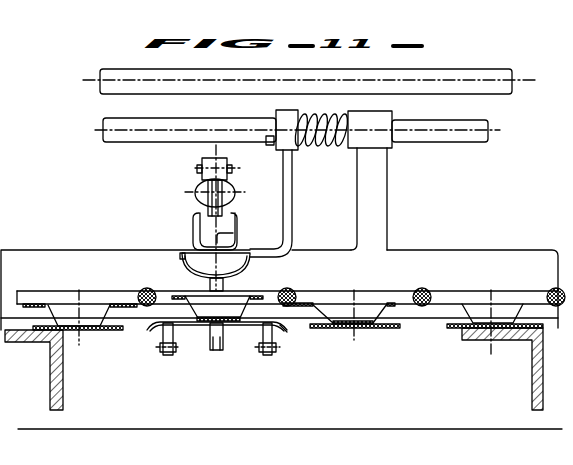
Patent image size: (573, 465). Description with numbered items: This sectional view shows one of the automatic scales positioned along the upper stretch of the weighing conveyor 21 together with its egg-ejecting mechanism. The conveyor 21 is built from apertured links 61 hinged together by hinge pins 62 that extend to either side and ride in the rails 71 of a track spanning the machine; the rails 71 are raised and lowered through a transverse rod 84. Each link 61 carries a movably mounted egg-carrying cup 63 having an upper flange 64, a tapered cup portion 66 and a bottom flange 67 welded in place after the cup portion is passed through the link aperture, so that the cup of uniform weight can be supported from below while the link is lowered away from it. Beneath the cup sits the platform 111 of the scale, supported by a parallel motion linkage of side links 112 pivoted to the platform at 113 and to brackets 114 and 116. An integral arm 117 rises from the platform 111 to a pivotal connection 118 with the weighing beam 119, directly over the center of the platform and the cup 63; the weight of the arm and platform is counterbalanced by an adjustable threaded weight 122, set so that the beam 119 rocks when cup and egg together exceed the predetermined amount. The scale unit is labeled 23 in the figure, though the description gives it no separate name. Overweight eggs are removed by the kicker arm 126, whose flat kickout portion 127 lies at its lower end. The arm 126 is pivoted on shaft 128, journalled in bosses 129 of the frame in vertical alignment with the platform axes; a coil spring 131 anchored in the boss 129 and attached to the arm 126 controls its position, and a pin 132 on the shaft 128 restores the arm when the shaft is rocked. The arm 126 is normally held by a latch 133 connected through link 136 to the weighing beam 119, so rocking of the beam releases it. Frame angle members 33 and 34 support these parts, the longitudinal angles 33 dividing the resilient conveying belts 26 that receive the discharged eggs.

The rod 84 is at (149, 87).
The shaft 128 is at (435, 137).
The pin 132 is at (271, 146).
The coil spring 131 is at (314, 148).
The bosses 129 is at (395, 143).
The cross angles 34 is at (388, 250).
The kicker arm 126 is at (293, 232).
The valve assembly 23 is at (199, 262).
The weighing beam 119 is at (203, 162).
The pivotal connection 118 is at (199, 170).
The adjustable weight 122 is at (197, 197).
The arm 117 is at (222, 206).
The link 136 is at (194, 219).
The latch 133 is at (232, 240).
The weighing conveyor 21 is at (478, 283).
The links 61 is at (31, 304).
The egg-carrying cup 63 is at (60, 305).
The tapered cup portion 66 is at (108, 304).
The bottom flange 67 is at (100, 329).
The hinge pin 62 is at (146, 290).
The kickout portion 127 is at (196, 263).
The upper flange 64 is at (250, 296).
The rails 71 is at (347, 300).
The pivot 113 is at (160, 325).
The side links 112 is at (162, 337).
The bracket 116 is at (262, 347).
The bracket 114 is at (166, 353).
The platform 111 is at (286, 333).
The longitudinal angles 33 is at (63, 380).
The conveying belts 26 is at (463, 430).